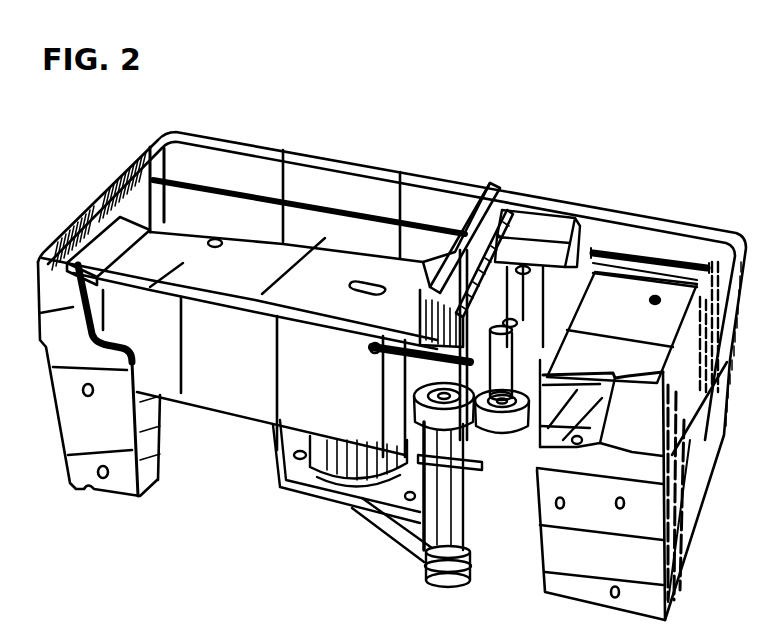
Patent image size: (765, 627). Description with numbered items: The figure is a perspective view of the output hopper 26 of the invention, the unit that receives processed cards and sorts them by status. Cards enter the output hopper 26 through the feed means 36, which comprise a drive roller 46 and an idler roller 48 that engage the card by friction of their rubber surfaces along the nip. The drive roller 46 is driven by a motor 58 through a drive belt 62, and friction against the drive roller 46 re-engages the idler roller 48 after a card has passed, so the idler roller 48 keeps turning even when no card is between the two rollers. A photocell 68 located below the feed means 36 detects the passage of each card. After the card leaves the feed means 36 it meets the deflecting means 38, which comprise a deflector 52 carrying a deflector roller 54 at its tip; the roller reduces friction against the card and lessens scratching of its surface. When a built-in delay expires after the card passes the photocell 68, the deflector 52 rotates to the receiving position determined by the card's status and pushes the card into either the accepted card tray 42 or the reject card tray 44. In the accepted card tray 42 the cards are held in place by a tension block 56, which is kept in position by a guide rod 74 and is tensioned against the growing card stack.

The output hopper 26 is at (438, 126).
The feed means 36 is at (360, 424).
The deflecting means 38 is at (545, 327).
The accepted card tray 42 is at (258, 283).
The reject card tray 44 is at (650, 279).
The drive roller 46 is at (428, 407).
The idler roller 48 is at (495, 428).
The deflector 52 is at (462, 335).
The deflector roller 54 is at (525, 353).
The tension block 56 is at (503, 207).
The motor 58 is at (350, 470).
The drive belt 62 is at (407, 543).
The photocell 68 is at (466, 480).
The guide rod 74 is at (253, 192).